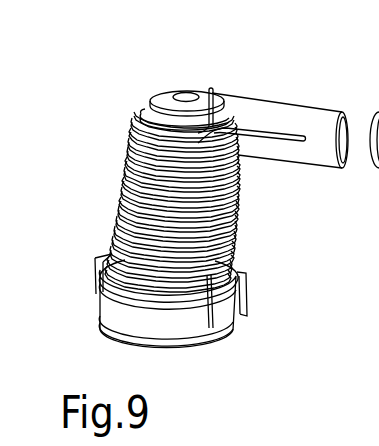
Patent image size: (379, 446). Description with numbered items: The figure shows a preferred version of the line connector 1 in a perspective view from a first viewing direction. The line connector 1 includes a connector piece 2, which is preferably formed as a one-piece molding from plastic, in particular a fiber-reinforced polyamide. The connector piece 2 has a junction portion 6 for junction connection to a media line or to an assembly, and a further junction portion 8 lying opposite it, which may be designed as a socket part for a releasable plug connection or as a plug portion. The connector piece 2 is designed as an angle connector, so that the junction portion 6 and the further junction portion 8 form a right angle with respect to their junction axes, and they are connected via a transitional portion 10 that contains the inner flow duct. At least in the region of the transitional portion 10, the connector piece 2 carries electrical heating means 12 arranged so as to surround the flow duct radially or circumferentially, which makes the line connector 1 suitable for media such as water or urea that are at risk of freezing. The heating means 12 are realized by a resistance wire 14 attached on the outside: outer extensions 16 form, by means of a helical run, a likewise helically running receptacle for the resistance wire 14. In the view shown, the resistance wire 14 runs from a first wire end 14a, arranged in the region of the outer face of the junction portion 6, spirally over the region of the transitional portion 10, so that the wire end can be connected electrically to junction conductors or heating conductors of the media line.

The line connector 1 is at (100, 128).
The connector piece 2 is at (188, 86).
The junction portion 6 is at (329, 106).
The further junction portion 8 is at (203, 358).
The transitional portion 10 is at (163, 137).
The electrical heating means 12 is at (166, 202).
The resistance wire 14 is at (214, 88).
The first wire end 14a is at (277, 125).
The outer extensions 16 is at (237, 190).